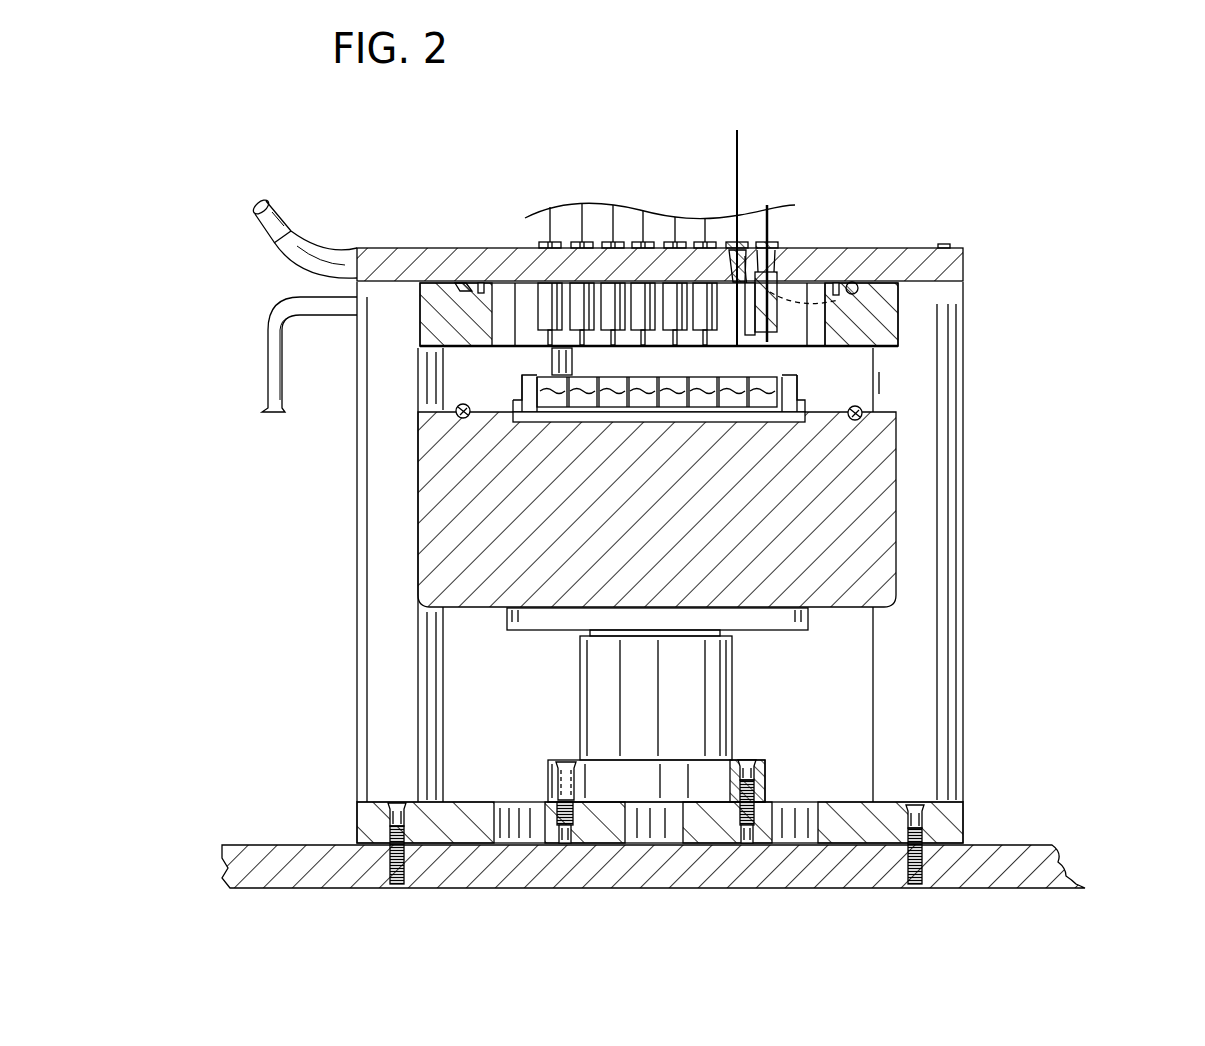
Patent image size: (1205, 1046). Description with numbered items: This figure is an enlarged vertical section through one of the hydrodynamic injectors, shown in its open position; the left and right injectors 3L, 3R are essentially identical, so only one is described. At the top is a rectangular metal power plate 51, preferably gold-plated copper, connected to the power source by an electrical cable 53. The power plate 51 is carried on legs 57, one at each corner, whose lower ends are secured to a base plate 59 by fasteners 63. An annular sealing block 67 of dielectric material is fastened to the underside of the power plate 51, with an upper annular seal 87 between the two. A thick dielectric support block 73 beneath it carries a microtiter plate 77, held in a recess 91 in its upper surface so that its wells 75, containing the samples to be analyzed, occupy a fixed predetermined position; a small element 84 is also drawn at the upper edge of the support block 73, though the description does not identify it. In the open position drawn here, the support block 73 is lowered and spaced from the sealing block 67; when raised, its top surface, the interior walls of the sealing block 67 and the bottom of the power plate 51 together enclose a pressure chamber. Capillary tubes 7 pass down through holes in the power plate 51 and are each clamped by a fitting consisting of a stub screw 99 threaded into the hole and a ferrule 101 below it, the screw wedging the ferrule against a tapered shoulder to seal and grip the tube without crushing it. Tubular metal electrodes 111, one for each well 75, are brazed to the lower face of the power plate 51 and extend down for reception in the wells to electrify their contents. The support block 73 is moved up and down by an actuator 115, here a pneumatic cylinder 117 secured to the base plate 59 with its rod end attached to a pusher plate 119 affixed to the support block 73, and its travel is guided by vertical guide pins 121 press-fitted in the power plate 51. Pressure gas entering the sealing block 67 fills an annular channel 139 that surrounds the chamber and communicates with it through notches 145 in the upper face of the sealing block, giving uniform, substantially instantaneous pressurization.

The left injector 3L is at (998, 234).
The right injector 3R is at (690, 314).
The capillary tubes 7 is at (585, 226).
The power plate 51 is at (965, 266).
The electrical cable 53 is at (283, 208).
The legs 57 is at (352, 762).
The base plate 59 is at (965, 822).
The fasteners 63 is at (400, 800).
The annular sealing block 67 is at (899, 317).
The support block 73 is at (897, 512).
The wells 75 is at (540, 376).
The microtiter plate 77 is at (880, 371).
The screw 84 is at (458, 416).
The upper annular seal 87 is at (462, 283).
The recess 91 is at (862, 410).
The stub screw 99 is at (772, 272).
The ferrule 101 is at (800, 270).
The tubular metal electrodes 111 is at (866, 286).
The actuator 115 is at (648, 716).
The pneumatic cylinder 117 is at (582, 706).
The pusher plate 119 is at (762, 632).
The vertical guide pins 121 is at (575, 358).
The annular channel 139 is at (481, 283).
The notches 145 is at (527, 247).